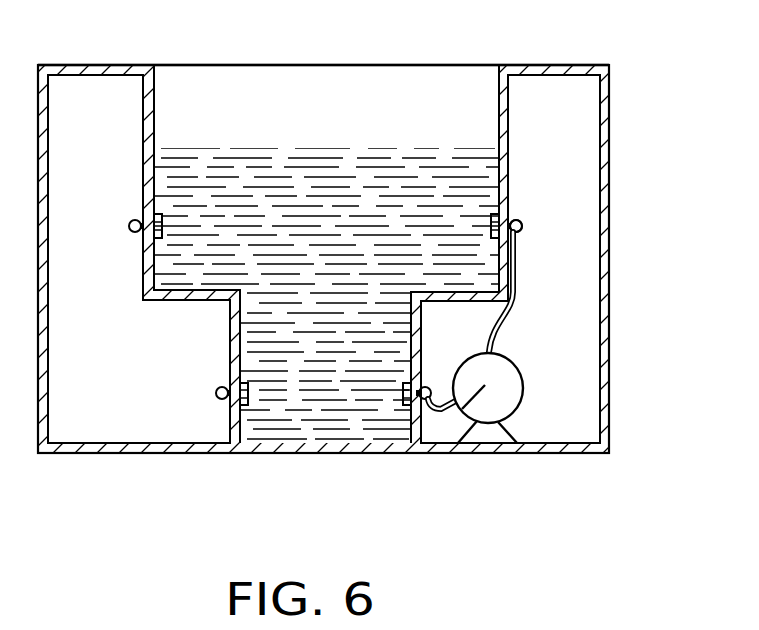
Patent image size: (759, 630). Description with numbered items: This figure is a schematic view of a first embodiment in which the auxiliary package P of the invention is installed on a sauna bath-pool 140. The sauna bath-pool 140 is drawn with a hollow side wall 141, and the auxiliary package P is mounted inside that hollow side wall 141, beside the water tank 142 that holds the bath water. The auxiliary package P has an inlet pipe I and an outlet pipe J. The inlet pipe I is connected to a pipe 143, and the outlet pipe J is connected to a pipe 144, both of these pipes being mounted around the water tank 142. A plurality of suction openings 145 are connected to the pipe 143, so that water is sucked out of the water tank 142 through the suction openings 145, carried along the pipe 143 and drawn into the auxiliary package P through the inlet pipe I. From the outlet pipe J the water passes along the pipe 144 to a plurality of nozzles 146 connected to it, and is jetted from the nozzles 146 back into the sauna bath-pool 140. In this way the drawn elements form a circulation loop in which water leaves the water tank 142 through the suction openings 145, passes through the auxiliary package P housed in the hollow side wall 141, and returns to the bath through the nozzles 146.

The sauna bath-pool 140 is at (612, 158).
The hollow side wall 141 is at (583, 288).
The water tank 142 is at (390, 115).
The pipe 143 is at (428, 408).
The pipe 144 is at (517, 221).
The suction openings 145 is at (238, 382).
The nozzles 146 is at (147, 210).
The outlet pipe J is at (520, 287).
The inlet pipe I is at (432, 404).
The auxiliary package P is at (531, 378).